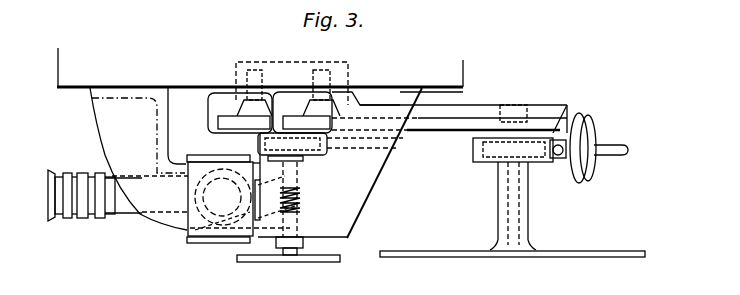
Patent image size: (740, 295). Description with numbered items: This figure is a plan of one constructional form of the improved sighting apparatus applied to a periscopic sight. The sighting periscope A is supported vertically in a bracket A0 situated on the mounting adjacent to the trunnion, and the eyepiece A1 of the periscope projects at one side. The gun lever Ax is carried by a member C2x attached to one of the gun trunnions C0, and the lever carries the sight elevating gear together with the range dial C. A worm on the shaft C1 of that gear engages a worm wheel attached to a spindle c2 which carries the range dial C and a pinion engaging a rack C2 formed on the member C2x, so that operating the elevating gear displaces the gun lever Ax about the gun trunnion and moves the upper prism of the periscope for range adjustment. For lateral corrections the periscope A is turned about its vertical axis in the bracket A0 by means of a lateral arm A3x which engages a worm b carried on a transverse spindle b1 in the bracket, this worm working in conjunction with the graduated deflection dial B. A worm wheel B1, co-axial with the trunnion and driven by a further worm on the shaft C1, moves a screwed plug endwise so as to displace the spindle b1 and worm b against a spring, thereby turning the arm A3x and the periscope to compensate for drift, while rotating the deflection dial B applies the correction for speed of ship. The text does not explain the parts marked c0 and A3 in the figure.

The bracket A0 is at (260, 143).
The eyepiece A1 is at (85, 178).
The sighting periscope A is at (228, 198).
The lateral arm A3x is at (225, 243).
The gun lever Ax is at (238, 125).
The cover c0 is at (280, 62).
The member C2x is at (287, 102).
The worm wheel B1 is at (308, 146).
The worm b is at (299, 193).
The transverse spindle b1 is at (293, 222).
The deflection dial B is at (290, 257).
The bar A3 is at (443, 128).
The shaft C1 is at (418, 147).
The rack C2 is at (518, 122).
The spindle c2 is at (512, 197).
The range dial C is at (445, 257).
The gun trunnion C0 is at (587, 128).